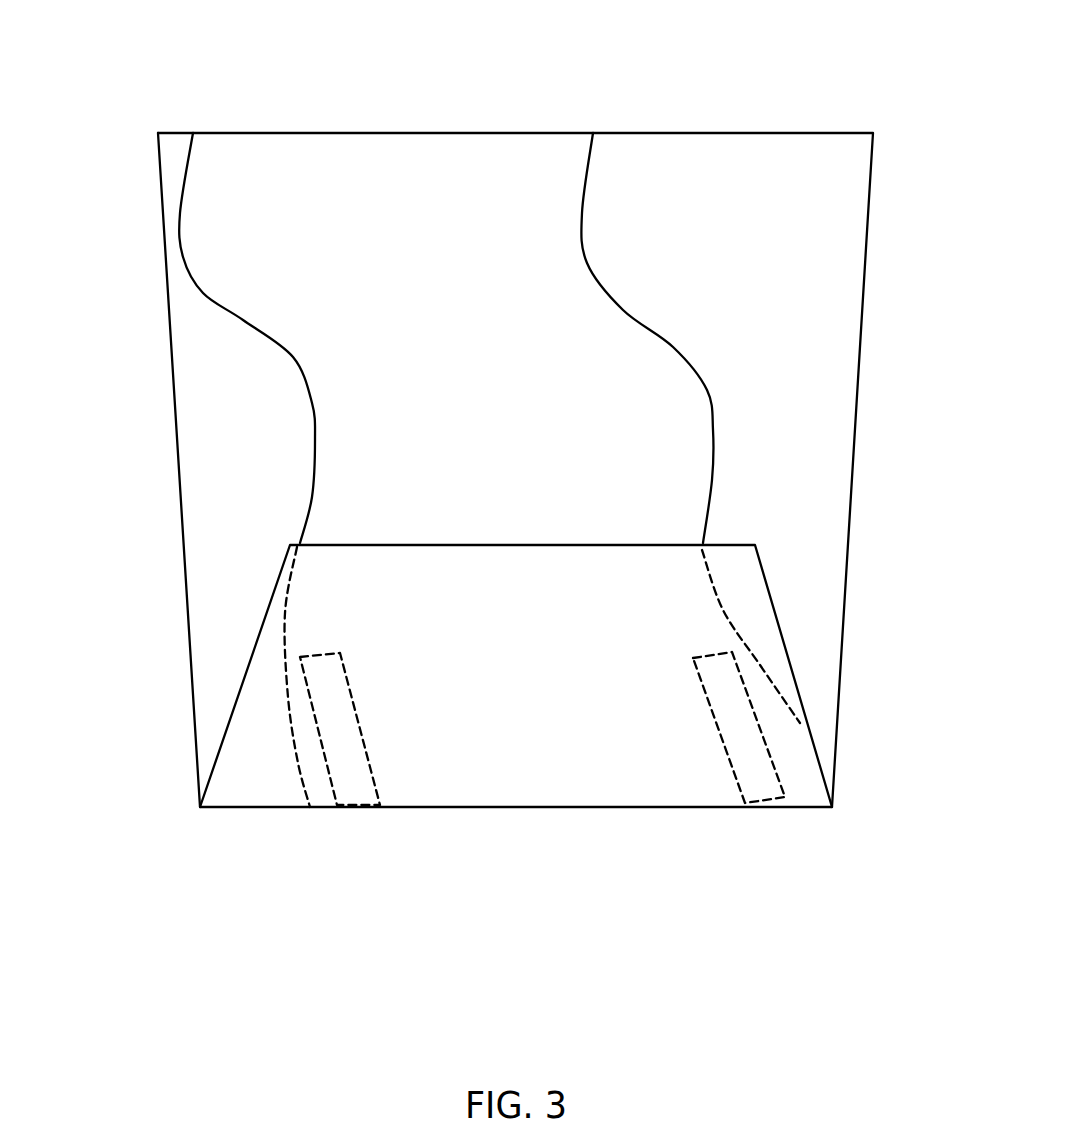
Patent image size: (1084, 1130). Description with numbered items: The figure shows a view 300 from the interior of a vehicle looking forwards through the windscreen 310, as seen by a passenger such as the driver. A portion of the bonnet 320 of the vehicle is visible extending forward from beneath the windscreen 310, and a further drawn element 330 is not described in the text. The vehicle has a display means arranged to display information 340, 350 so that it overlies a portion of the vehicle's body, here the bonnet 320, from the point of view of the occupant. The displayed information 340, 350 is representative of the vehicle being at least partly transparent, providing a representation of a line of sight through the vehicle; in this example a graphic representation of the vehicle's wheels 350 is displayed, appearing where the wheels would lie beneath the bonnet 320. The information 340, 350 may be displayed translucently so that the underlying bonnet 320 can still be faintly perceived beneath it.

The view 300 is at (284, 97).
The windscreen 310 is at (177, 431).
The bonnet 320 is at (492, 742).
The curved wall surface 330 is at (548, 168).
The information 340 is at (723, 610).
The representation of the vehicle's wheels 350 is at (355, 770).